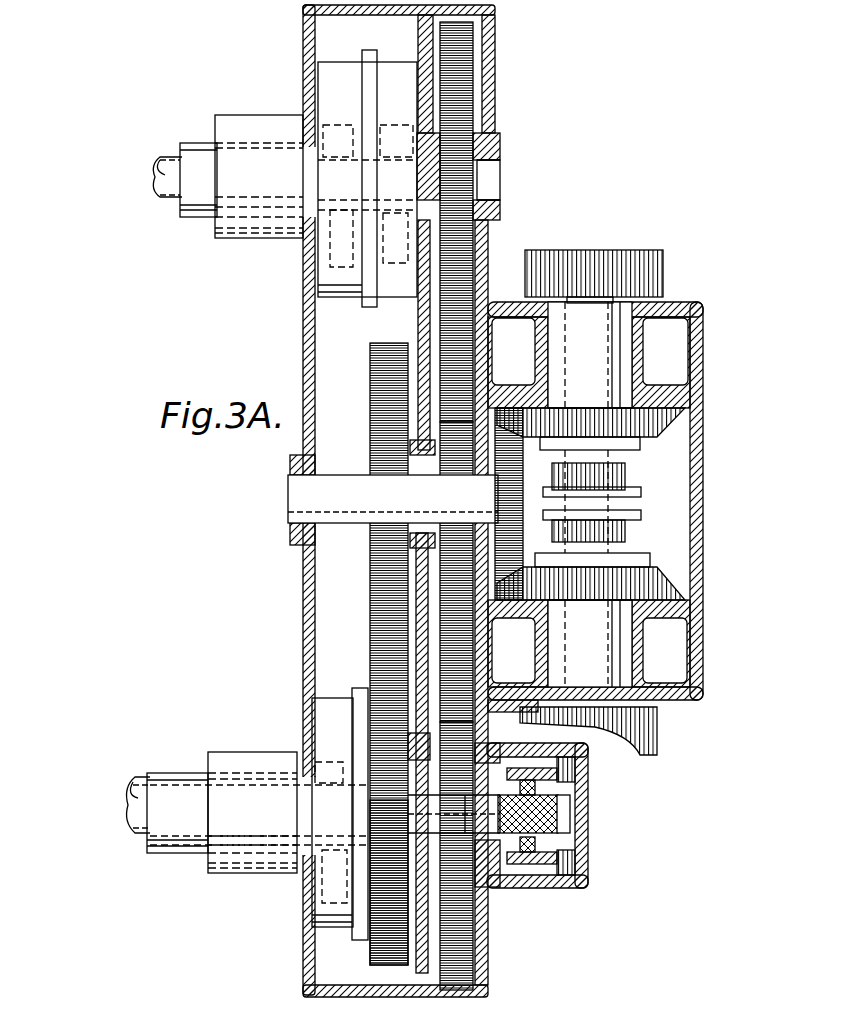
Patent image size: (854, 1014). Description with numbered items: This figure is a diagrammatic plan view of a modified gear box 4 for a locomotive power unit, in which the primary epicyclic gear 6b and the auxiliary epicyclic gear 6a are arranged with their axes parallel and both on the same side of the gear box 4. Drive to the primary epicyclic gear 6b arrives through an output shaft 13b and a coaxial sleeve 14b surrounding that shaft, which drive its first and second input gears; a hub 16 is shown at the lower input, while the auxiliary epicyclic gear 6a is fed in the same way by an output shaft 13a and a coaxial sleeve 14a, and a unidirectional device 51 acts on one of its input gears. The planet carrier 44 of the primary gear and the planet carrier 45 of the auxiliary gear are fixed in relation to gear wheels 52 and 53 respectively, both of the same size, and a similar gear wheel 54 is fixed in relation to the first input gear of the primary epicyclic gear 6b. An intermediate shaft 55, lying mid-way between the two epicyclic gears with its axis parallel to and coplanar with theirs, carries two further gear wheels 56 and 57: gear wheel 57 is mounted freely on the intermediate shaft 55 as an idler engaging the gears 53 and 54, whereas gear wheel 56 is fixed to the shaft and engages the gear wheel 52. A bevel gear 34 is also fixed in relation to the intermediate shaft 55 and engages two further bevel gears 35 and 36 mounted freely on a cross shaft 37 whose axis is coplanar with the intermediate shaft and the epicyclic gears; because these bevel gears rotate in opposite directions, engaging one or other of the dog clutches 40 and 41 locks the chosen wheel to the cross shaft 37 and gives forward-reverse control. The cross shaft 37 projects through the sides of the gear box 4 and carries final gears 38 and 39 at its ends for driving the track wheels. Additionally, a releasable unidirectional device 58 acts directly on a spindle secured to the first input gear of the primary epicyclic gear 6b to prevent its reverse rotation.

The gear box 4 is at (690, 310).
The auxiliary epicyclic gear 6a is at (340, 75).
The primary epicyclic gear 6b is at (315, 910).
The output shaft 13a is at (165, 158).
The output shaft 13b is at (140, 790).
The coaxial sleeve 14a is at (218, 140).
The coaxial sleeve 14b is at (170, 853).
The lower hub 16 is at (226, 752).
The bevel gear 34 is at (515, 540).
The further bevel gear 35 is at (672, 408).
The further bevel gear 36 is at (650, 605).
The cross shaft 37 is at (600, 447).
The final gear 38 is at (640, 258).
The final gear 39 is at (648, 720).
The dog clutch 40 is at (600, 478).
The dog clutch 41 is at (625, 535).
The planet carrier 44 is at (330, 698).
The planet carrier 45 is at (330, 290).
The unidirectional device 51 is at (290, 114).
The gear wheel 52 is at (370, 955).
The gear wheel 53 is at (470, 85).
The gear wheel 54 is at (460, 905).
The intermediate shaft 55 is at (300, 480).
The gear wheel 56 is at (372, 547).
The gear wheel 57 is at (440, 570).
The unidirectional device 58 is at (598, 814).